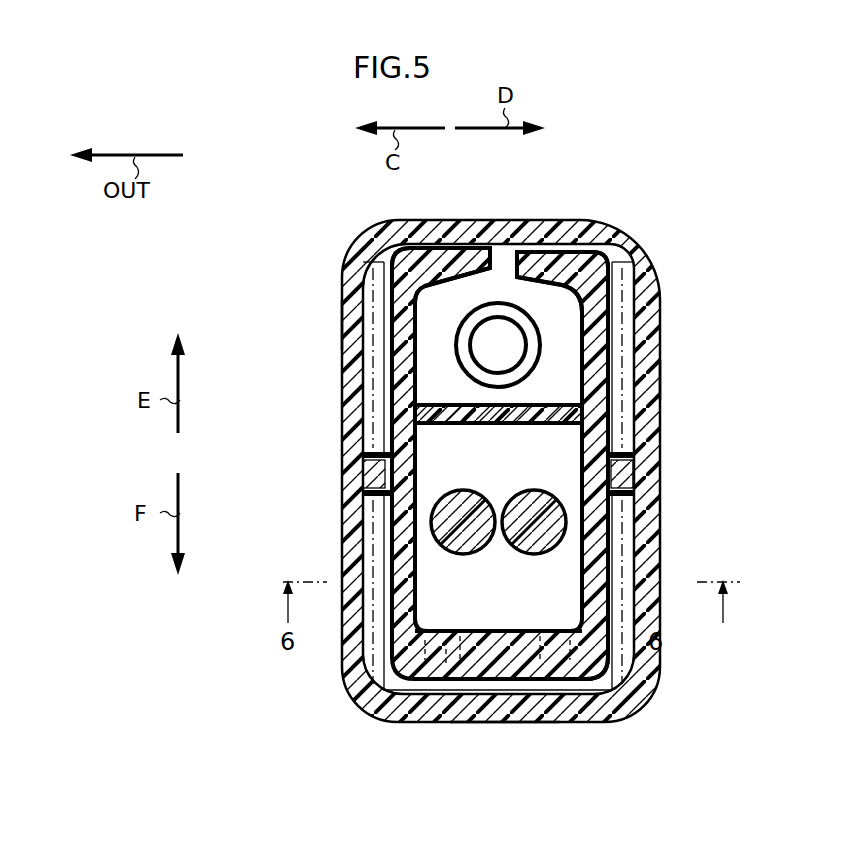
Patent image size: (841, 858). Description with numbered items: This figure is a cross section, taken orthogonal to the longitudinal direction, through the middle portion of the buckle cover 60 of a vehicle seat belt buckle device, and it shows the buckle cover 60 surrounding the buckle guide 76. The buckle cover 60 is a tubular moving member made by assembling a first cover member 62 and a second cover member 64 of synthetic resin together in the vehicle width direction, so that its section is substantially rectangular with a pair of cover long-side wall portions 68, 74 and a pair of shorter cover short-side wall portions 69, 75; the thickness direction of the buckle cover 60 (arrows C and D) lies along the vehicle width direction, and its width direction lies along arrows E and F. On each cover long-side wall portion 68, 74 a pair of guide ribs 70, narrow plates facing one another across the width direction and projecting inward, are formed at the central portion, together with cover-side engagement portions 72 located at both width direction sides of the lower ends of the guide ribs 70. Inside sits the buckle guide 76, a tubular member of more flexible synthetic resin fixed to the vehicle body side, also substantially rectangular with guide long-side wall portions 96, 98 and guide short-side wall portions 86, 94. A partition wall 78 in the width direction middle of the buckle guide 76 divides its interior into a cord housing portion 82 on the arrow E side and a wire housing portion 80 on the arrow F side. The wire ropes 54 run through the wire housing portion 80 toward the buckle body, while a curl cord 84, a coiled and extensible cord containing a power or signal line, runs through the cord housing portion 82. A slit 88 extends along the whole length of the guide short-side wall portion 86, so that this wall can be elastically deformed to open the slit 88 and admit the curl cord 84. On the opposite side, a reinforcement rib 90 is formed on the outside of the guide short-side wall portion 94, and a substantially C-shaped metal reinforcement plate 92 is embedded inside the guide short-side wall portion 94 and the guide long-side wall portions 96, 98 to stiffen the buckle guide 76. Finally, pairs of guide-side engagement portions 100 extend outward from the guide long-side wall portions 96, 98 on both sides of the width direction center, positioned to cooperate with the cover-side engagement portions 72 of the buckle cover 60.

The wire ropes 54 is at (520, 555).
The buckle cover 60 is at (652, 258).
The first cover member 62 is at (342, 474).
The second cover member 64 is at (664, 492).
The cover long-side wall portion 68 is at (378, 406).
The cover short-side wall portion 69 is at (586, 250).
The guide ribs 70 is at (373, 454).
The cover-side engagement portions 72 is at (383, 350).
The cover long-side wall portion 74 is at (660, 378).
The cover short-side wall portion 75 is at (517, 723).
The buckle guide 76 is at (552, 248).
The partition wall 78 is at (570, 410).
The wire housing portion 80 is at (556, 592).
The cord housing portion 82 is at (433, 388).
The curl cord 84 is at (532, 352).
The guide short-side wall portion 86 is at (532, 252).
The slit 88 is at (466, 248).
The reinforcement rib 90 is at (483, 645).
The reinforcement plate 92 is at (450, 640).
The guide short-side wall portion 94 is at (547, 645).
The guide long-side wall portion 96 is at (362, 327).
The guide long-side wall portion 98 is at (608, 370).
The guide-side engagement portions 100 is at (372, 630).